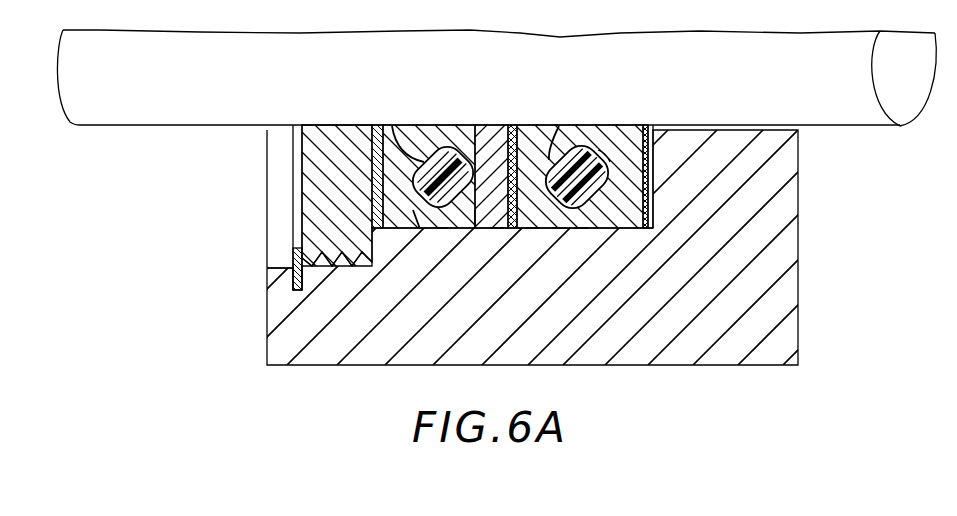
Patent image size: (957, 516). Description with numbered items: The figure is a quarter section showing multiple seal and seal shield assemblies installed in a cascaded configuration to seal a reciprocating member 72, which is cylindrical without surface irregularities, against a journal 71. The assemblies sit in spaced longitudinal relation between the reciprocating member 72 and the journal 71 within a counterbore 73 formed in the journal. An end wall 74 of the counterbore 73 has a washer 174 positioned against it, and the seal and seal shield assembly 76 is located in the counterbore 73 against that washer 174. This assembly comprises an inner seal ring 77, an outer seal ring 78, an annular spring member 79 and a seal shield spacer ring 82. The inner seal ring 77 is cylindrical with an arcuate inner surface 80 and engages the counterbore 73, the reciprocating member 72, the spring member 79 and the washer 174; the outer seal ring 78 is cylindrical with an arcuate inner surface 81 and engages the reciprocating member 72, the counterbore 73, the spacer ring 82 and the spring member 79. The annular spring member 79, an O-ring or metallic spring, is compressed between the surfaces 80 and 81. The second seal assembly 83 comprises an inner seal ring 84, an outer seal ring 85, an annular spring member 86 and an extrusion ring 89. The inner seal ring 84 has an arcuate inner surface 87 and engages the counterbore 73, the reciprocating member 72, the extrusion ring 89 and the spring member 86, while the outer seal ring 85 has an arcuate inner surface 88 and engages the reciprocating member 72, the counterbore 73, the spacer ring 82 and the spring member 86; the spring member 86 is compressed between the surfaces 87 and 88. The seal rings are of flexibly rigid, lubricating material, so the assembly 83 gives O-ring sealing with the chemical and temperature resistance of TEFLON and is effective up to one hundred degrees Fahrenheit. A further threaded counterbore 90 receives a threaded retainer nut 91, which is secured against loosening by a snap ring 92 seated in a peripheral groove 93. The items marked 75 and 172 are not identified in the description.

The journal 71 is at (745, 365).
The reciprocating member 72 is at (835, 107).
The counterbore 73 is at (533, 228).
The end wall 74 is at (647, 210).
The seal portion 75 is at (497, 230).
The seal and seal shield assembly 76 is at (550, 125).
The inner seal ring 77 is at (583, 125).
The outer seal ring 78 is at (580, 230).
The annular spring member 79 is at (610, 175).
The arcuate inner surface 80 is at (603, 160).
The arcuate inner surface 81 is at (557, 205).
The seal shield spacer ring 82 is at (510, 125).
The second seal assembly 83 is at (463, 125).
The inner seal ring 84 is at (410, 125).
The outer seal ring 85 is at (474, 228).
The annular spring member 86 is at (376, 175).
The arcuate inner surface 87 is at (390, 125).
The arcuate inner surface 88 is at (441, 212).
The extrusion ring 89 is at (380, 232).
The threaded counterbore 90 is at (330, 254).
The threaded retainer nut 91 is at (307, 217).
The snap ring 92 is at (290, 258).
The peripheral groove 93 is at (292, 296).
The wall 172 is at (610, 125).
The washer 174 is at (649, 230).